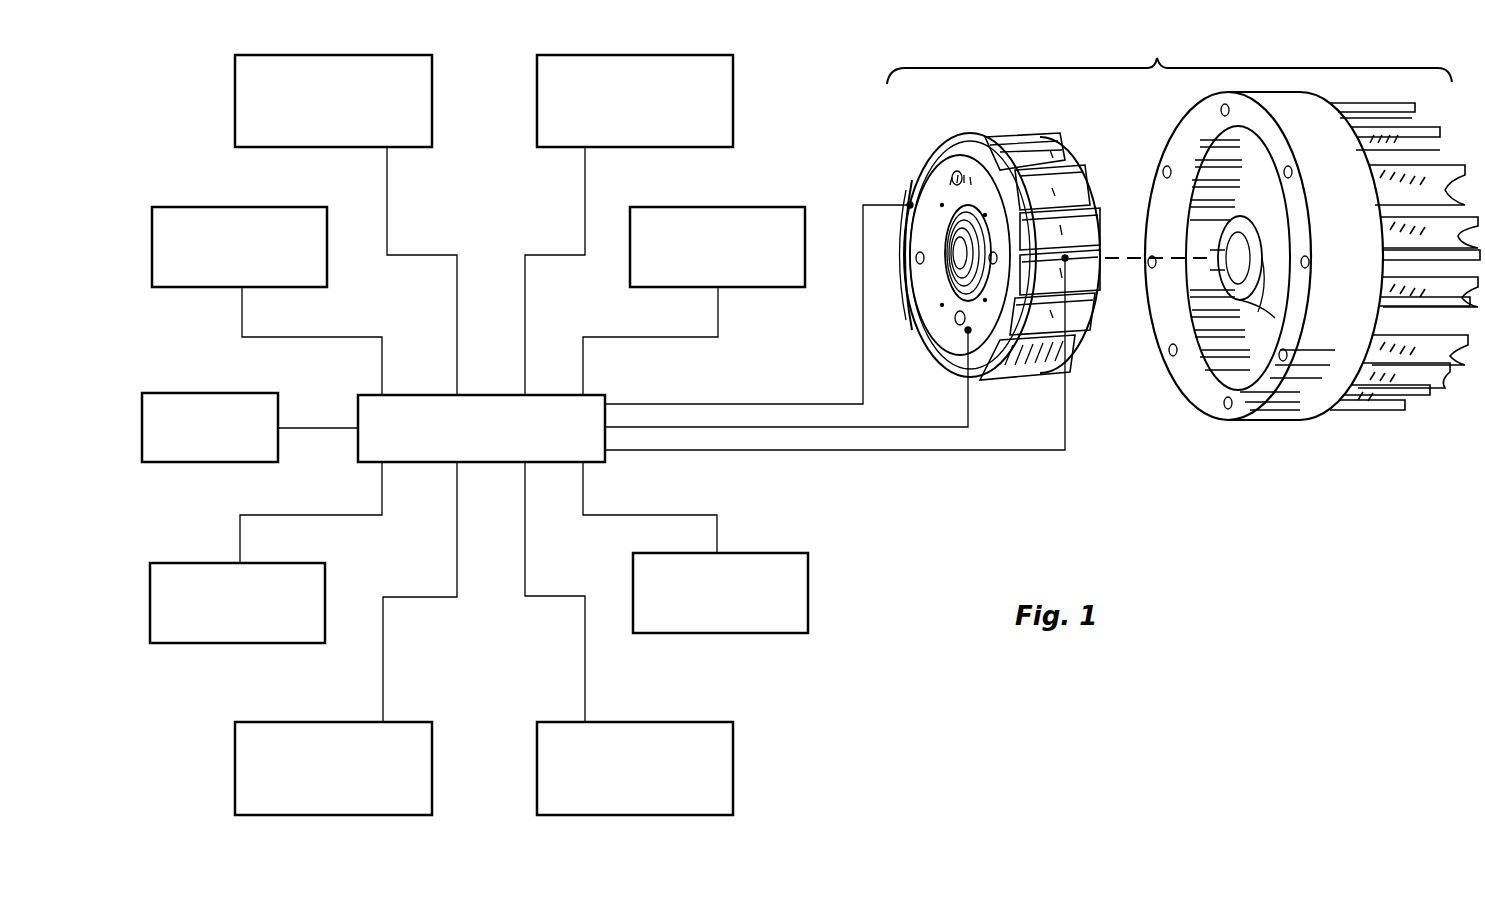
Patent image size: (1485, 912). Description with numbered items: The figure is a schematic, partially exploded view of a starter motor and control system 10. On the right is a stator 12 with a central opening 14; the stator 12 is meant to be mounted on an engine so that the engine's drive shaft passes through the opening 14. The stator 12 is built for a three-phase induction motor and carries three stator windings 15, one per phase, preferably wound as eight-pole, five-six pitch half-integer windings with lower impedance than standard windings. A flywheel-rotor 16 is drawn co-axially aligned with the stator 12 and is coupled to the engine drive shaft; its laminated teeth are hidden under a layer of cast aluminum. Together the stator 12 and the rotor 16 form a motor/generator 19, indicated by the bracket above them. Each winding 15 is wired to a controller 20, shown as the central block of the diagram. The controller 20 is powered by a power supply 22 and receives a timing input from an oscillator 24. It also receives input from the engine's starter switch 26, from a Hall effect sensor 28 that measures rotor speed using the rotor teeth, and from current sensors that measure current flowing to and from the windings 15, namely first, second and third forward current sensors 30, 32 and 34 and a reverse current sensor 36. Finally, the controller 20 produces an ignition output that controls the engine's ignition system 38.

The system 10 is at (917, 45).
The stator 12 is at (990, 235).
The central opening 14 is at (968, 272).
The stator windings 15 is at (988, 142).
The flywheel-rotor 16 is at (1197, 116).
The motor/generator 19 is at (1160, 53).
The controller 20 is at (502, 377).
The power supply 22 is at (310, 217).
The oscillator 24 is at (263, 403).
The starter switch 26 is at (315, 570).
The Hall effect sensor 28 is at (795, 585).
The first forward current sensor 30 is at (413, 79).
The second forward current sensor 32 is at (540, 110).
The third forward current sensor 34 is at (437, 712).
The reverse current sensor 36 is at (707, 707).
The ignition system 38 is at (710, 208).